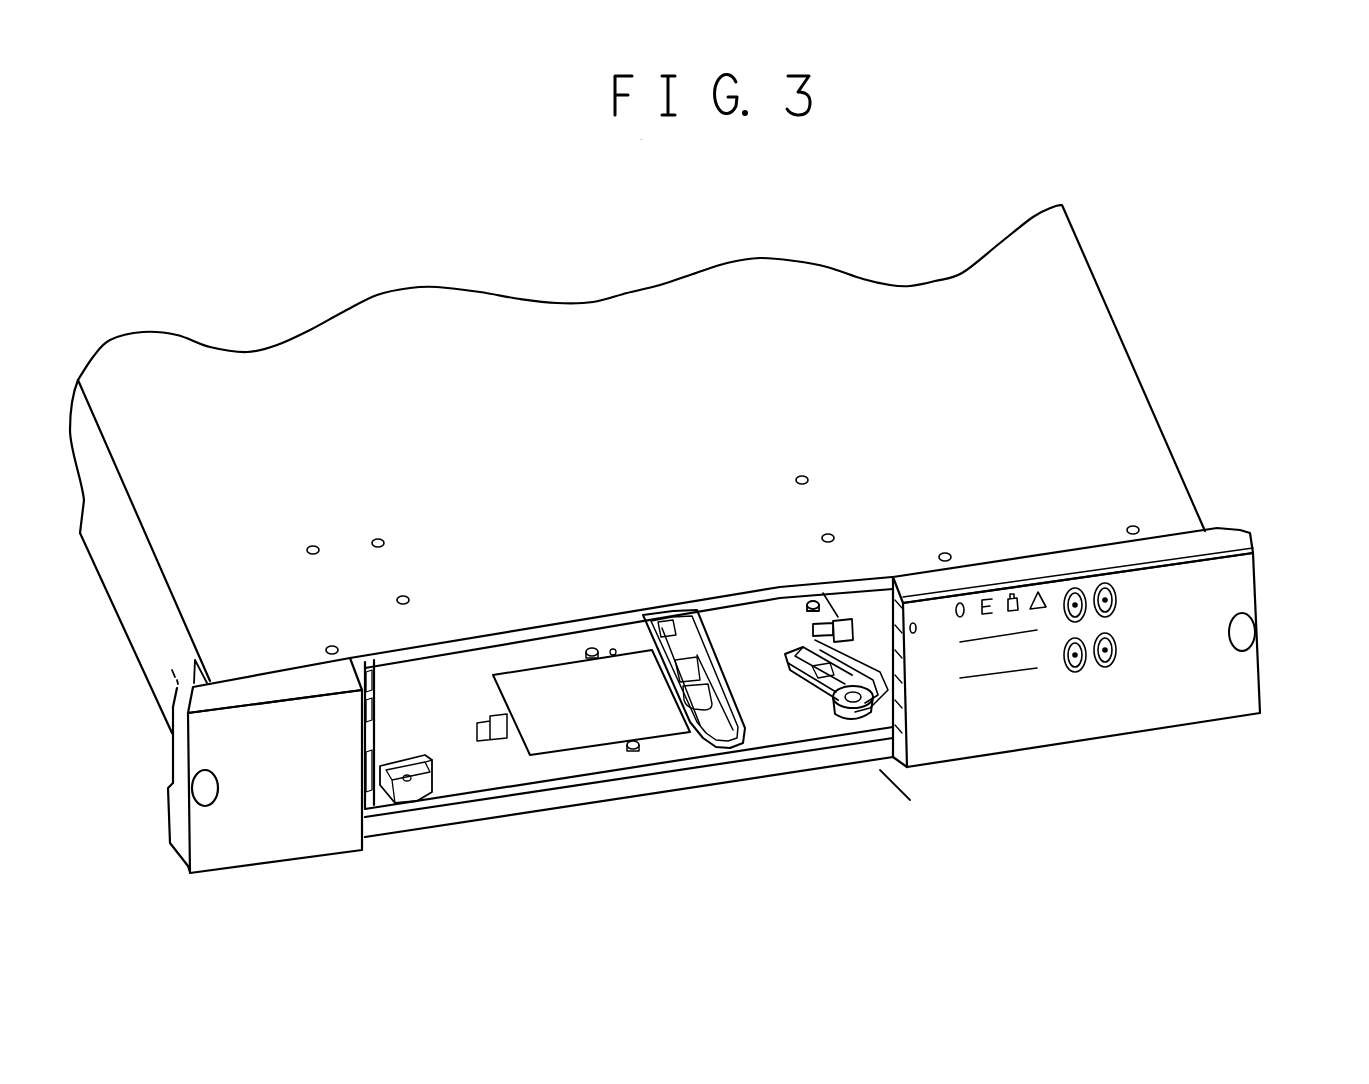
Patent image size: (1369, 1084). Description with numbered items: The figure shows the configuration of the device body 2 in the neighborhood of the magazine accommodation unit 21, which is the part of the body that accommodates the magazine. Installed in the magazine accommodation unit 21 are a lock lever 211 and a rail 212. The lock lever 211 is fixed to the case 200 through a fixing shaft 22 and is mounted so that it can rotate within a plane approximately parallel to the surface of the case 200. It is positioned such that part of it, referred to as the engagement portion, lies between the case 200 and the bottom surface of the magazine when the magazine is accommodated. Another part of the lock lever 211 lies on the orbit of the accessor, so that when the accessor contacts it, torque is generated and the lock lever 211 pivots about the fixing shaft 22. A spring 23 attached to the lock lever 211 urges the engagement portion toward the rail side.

The device body 2 is at (626, 232).
The case 200 is at (1127, 445).
The magazine accommodation unit 21 is at (597, 712).
The lock lever 211 is at (823, 687).
The rail 212 is at (722, 713).
The fixing shaft 22 is at (857, 700).
The spring 23 is at (853, 645).